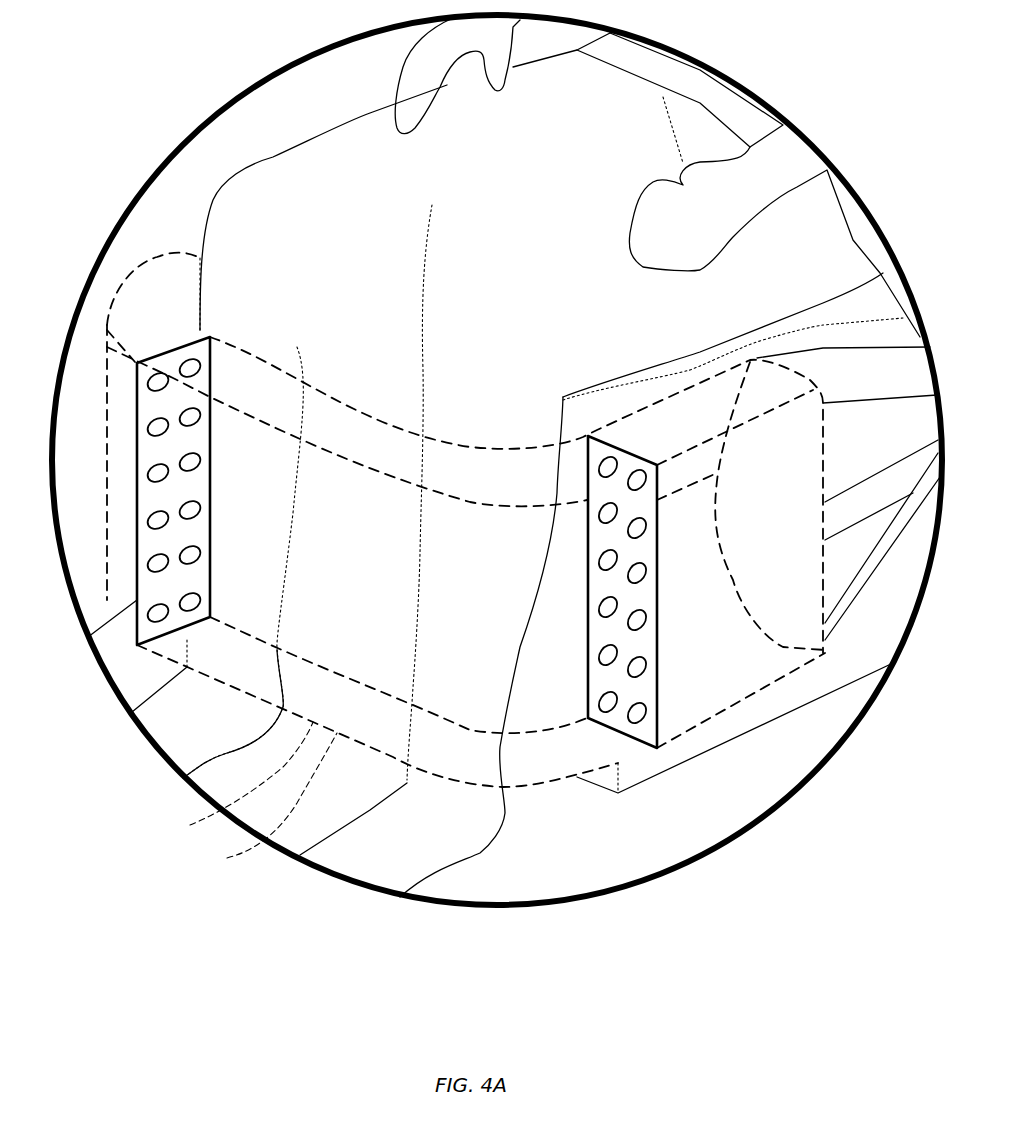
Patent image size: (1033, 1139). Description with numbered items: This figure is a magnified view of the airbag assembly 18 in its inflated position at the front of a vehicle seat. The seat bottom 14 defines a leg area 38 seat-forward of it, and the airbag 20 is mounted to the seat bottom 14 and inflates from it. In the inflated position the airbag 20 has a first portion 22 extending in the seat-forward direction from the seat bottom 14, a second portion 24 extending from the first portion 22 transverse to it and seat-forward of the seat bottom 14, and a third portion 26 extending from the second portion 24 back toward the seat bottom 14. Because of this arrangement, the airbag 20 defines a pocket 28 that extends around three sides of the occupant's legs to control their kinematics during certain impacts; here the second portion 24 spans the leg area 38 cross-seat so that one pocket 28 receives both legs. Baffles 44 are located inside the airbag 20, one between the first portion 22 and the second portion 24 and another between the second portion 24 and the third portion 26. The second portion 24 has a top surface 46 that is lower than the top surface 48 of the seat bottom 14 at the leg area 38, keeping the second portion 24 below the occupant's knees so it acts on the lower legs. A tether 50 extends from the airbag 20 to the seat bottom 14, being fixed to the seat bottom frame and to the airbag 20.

The seat bottom 14 is at (385, 315).
The airbag assembly 18 is at (547, 806).
The airbag 20 is at (227, 858).
The first portion 22 is at (743, 707).
The second portion 24 is at (190, 825).
The third portion 26 is at (165, 252).
The pocket 28 is at (384, 394).
The leg area 38 is at (298, 349).
The baffle 44 is at (135, 642).
The top surface of the second portion 46 is at (353, 430).
The top surface of the seat bottom 48 is at (372, 519).
The tether 50 is at (847, 613).